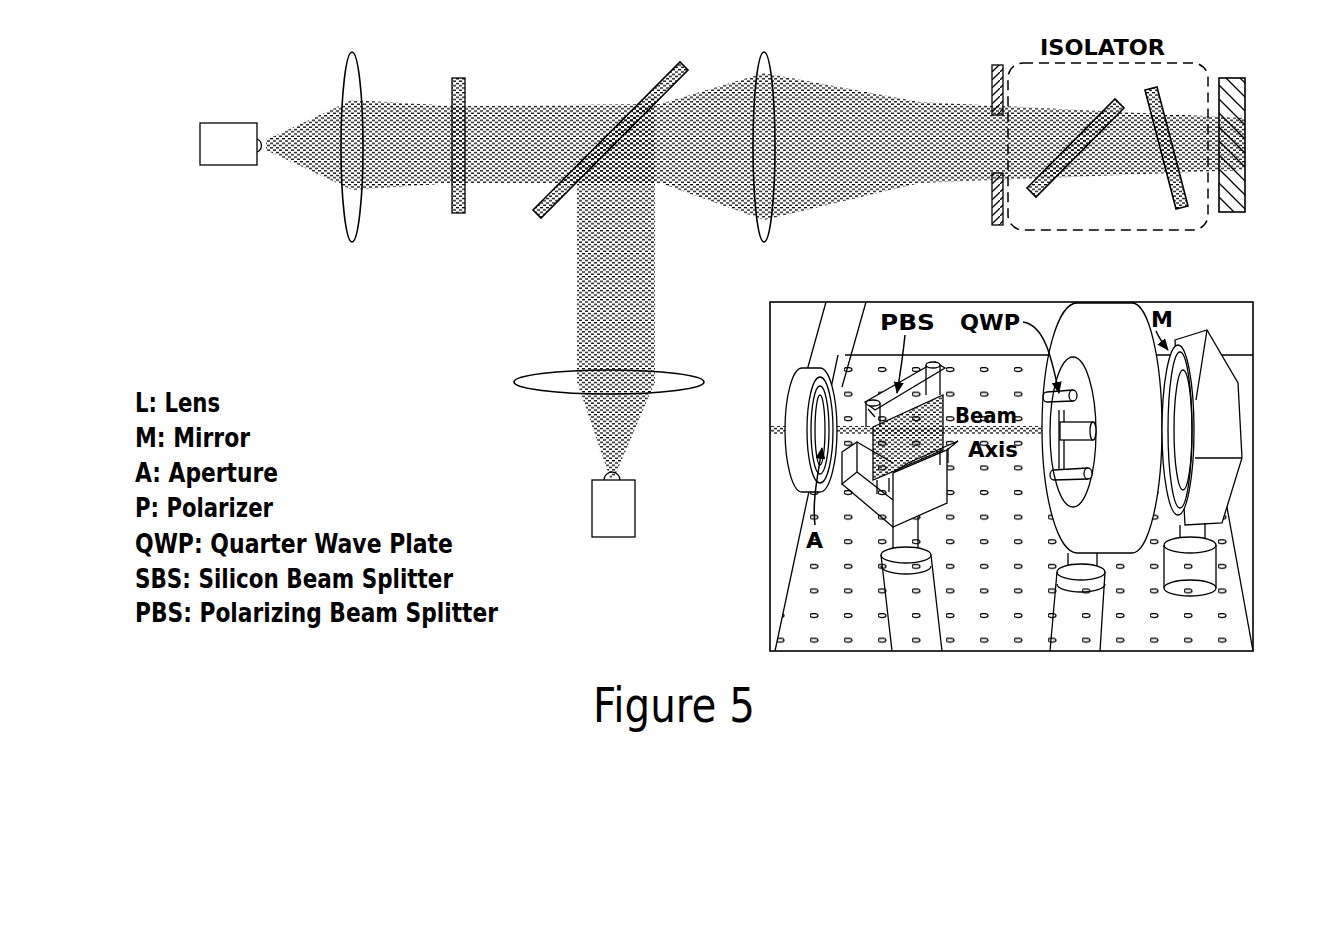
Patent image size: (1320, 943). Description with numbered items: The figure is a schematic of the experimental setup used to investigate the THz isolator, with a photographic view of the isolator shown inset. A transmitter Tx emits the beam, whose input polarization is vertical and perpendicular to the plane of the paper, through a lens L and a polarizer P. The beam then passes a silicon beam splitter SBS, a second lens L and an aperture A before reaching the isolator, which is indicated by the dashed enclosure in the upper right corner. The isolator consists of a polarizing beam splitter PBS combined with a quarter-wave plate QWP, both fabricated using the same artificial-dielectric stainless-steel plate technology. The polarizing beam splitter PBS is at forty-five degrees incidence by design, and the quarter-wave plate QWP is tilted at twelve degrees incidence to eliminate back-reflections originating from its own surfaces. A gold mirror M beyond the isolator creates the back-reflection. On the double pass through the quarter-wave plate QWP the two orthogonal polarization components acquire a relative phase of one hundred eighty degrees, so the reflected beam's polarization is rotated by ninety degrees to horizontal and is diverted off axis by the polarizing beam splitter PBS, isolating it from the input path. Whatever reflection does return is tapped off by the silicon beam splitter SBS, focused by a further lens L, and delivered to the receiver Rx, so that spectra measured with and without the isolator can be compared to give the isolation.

The transmitter Tx is at (230, 144).
The receiver Rx is at (613, 504).
The lens L is at (352, 248).
The gold mirror M is at (1238, 218).
The aperture A is at (988, 221).
The polarizer P is at (459, 220).
The quarter-wave plate QWP is at (1178, 212).
The silicon beam splitter SBS is at (540, 219).
The polarizing beam splitter PBS is at (1034, 199).